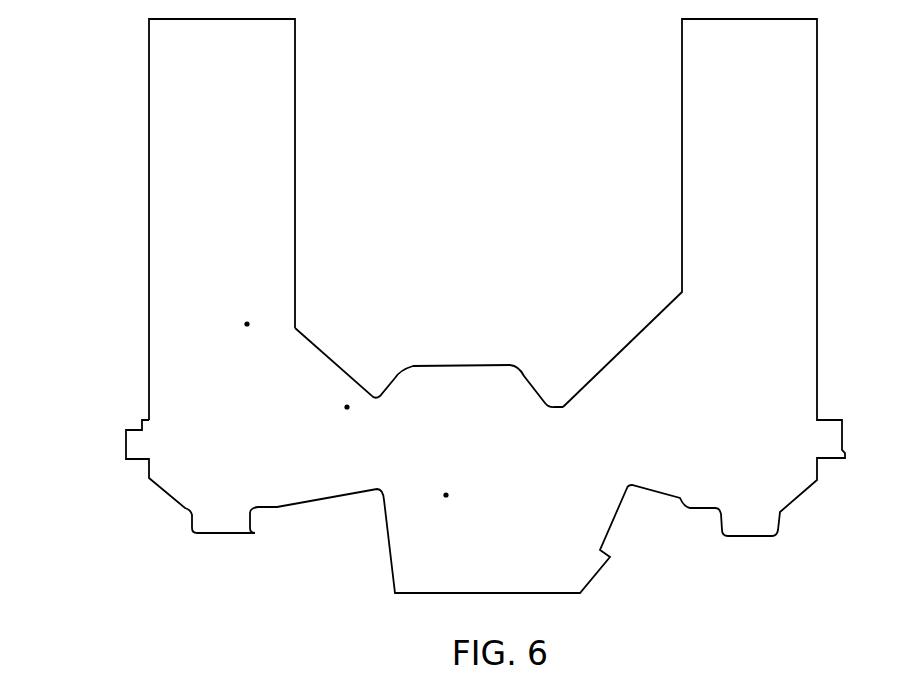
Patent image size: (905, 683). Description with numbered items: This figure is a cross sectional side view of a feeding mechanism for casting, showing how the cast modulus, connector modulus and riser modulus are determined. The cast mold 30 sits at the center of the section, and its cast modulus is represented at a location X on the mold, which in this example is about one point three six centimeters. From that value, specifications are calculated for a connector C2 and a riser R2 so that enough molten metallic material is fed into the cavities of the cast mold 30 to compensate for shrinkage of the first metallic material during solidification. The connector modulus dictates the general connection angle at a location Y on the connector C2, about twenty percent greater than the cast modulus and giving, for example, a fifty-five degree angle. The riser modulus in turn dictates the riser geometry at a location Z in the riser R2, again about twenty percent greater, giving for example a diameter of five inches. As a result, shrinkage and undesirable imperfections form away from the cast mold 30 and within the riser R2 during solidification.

The riser R2 is at (295, 112).
The connector C2 is at (327, 354).
The cast mold 30 is at (468, 363).
The location in the riser Z is at (247, 324).
The location on the connector Y is at (347, 407).
The location on the cast mold X is at (446, 495).